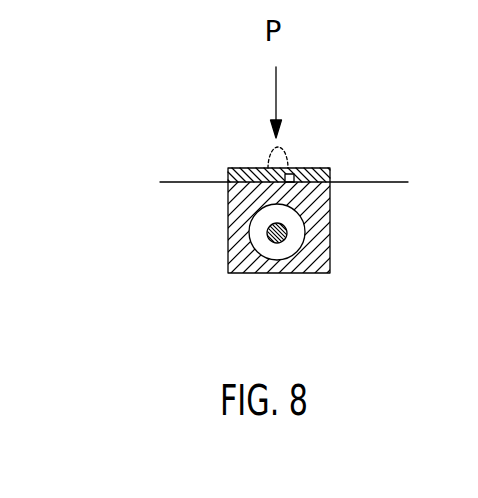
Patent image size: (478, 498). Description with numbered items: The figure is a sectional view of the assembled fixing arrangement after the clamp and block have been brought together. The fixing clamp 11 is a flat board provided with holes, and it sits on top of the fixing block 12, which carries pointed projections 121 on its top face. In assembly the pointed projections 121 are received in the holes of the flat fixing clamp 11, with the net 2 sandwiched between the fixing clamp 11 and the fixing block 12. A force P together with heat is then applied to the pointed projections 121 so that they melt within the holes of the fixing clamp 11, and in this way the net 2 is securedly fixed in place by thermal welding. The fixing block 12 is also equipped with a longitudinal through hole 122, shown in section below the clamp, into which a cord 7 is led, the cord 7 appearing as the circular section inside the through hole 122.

The net 2 is at (393, 182).
The cord 7 is at (267, 238).
The fixing clamp 11 is at (318, 168).
The fixing block 12 is at (330, 233).
The pointed projections 121 is at (264, 170).
The longitudinal through hole 122 is at (258, 223).